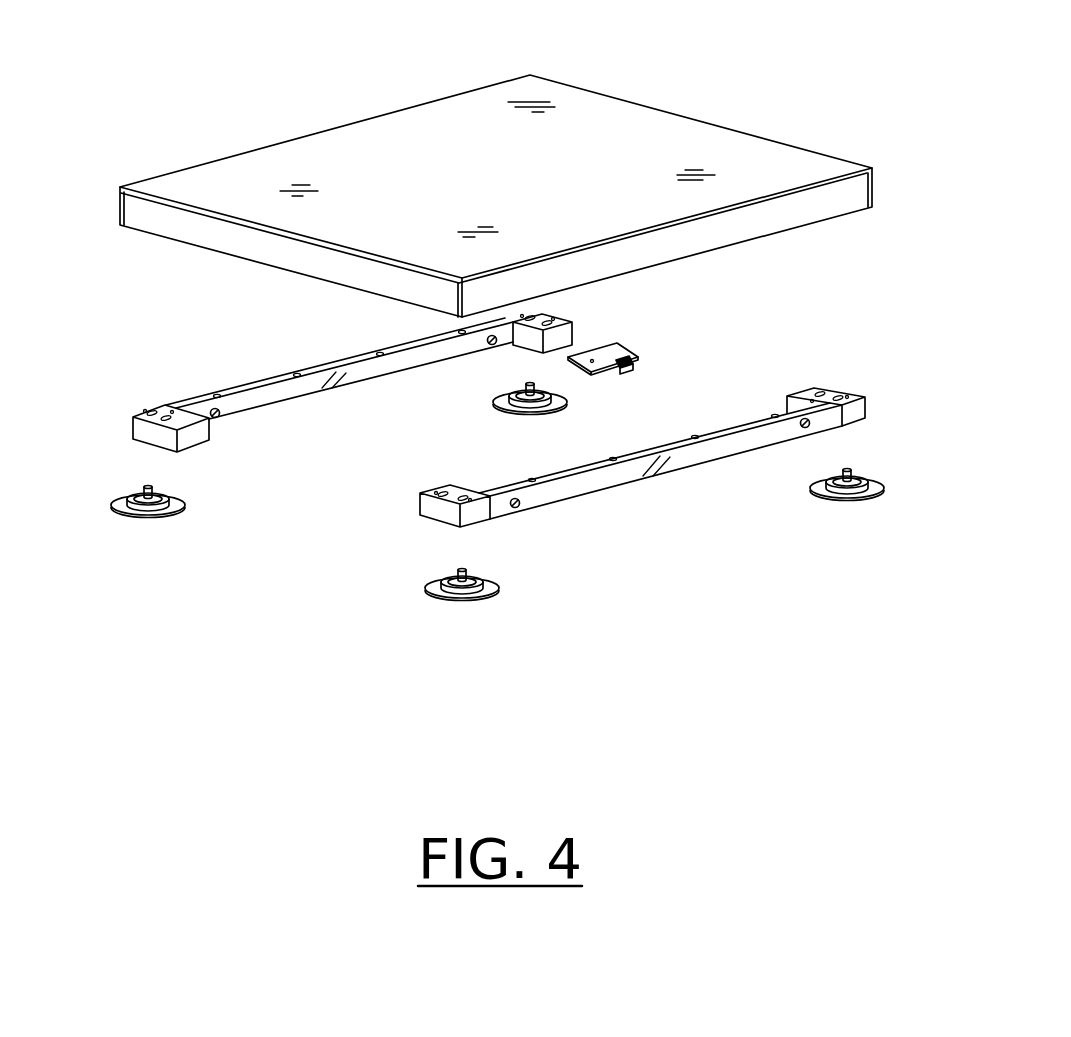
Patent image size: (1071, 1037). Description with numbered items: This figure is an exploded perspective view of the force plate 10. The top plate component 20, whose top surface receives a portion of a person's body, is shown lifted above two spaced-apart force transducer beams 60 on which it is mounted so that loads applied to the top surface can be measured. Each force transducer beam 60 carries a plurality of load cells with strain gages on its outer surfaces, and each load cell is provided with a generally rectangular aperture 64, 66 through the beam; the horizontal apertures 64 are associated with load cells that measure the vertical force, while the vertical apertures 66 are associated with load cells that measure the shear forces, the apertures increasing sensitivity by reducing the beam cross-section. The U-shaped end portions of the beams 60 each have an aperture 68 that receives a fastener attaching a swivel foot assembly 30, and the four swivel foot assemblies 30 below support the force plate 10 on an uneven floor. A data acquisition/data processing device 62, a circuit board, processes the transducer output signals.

The force plate 10 is at (271, 601).
The top plate component 20 is at (390, 166).
The swivel foot assembly 30 is at (130, 495).
The force transducer beam 60 is at (240, 386).
The data acquisition/data processing device 62 is at (630, 350).
The horizontal aperture 64 is at (216, 413).
The vertical aperture 66 is at (172, 408).
The aperture 68 is at (148, 414).